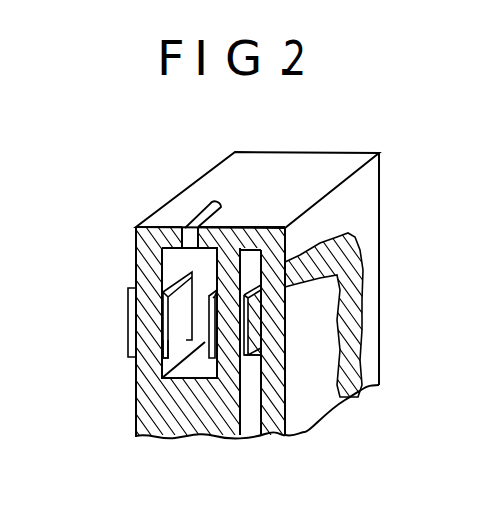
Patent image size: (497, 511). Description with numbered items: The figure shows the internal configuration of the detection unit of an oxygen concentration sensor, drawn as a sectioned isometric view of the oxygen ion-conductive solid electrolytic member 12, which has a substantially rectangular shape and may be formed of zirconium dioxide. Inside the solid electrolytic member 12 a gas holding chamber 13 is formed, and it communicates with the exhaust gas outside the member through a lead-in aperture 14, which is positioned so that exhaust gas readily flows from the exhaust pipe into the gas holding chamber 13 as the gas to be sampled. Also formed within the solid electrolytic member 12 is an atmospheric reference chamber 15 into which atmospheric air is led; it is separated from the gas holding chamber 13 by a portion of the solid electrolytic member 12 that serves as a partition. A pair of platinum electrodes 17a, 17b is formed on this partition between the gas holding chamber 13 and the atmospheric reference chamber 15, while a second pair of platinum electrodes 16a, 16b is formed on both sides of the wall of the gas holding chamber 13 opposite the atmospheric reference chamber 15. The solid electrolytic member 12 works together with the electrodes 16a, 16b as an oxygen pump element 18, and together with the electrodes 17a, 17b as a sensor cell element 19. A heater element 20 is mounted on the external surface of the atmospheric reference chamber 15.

The oxygen ion-conductive solid electrolytic member 12 is at (351, 153).
The gas holding chamber 13 is at (168, 255).
The lead-in aperture 14 is at (207, 215).
The atmospheric reference chamber 15 is at (250, 420).
The electrode 16a is at (182, 342).
The electrode 16b is at (183, 365).
The electrode 17a is at (260, 332).
The electrode 17b is at (203, 344).
The oxygen pump element 18 is at (127, 305).
The sensor cell element 19 is at (250, 370).
The heater element 20 is at (352, 300).